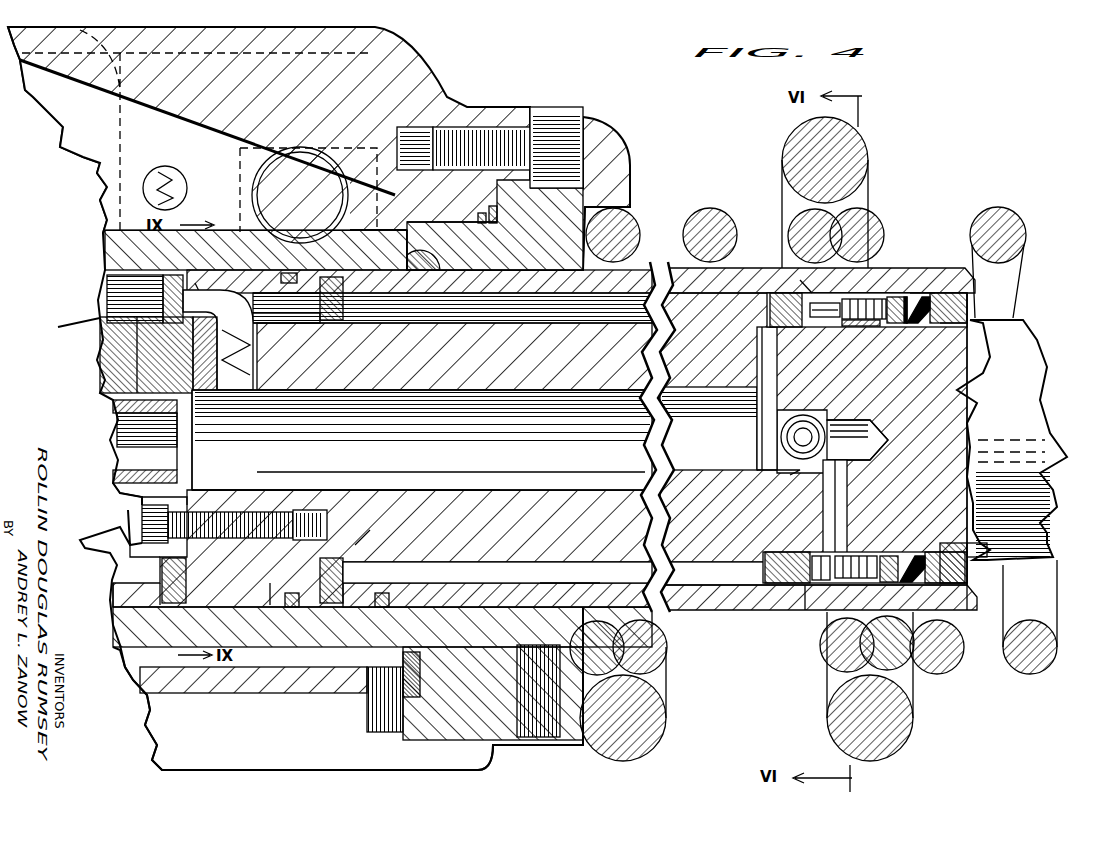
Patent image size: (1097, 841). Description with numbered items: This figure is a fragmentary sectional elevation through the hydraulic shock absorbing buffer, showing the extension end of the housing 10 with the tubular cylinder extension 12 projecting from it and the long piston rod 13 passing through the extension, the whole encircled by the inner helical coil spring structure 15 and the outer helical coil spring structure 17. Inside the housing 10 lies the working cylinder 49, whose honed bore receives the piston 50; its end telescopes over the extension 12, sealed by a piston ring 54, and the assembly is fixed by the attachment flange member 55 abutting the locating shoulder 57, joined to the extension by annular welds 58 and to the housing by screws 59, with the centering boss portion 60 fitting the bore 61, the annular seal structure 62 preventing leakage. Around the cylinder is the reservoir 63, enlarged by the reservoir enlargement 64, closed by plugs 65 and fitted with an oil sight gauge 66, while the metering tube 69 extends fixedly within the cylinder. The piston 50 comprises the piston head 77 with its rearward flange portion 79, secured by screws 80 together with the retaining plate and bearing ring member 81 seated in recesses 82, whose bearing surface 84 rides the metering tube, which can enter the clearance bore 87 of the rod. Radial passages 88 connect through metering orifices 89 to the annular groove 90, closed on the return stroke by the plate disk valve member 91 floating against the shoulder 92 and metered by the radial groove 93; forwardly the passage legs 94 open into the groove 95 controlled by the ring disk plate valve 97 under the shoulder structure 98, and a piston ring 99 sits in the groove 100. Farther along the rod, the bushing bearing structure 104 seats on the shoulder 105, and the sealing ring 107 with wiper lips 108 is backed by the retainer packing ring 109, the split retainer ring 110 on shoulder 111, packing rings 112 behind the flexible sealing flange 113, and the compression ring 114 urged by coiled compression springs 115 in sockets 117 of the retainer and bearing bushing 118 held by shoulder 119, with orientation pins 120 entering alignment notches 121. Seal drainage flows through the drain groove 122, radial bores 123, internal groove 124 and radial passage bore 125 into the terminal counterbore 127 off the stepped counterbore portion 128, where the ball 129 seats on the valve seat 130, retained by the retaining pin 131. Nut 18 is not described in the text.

The housing 10 is at (158, 690).
The cylinder extension 12 is at (748, 272).
The piston rod 13 is at (1022, 350).
The inner helical coil spring structure 15 is at (1022, 240).
The outer helical coil spring structure 17 is at (858, 157).
The nut 18 is at (305, 540).
The working cylinder 49 is at (103, 266).
The piston 50 is at (151, 596).
The piston ring 54 is at (416, 590).
The attachment flange member 55 is at (518, 107).
The locating shoulder 57 is at (565, 590).
The annular welds 58 is at (525, 302).
The screws 59 is at (556, 108).
The centering boss portion 60 is at (406, 230).
The concentric bore 61 is at (470, 222).
The annular seal structure 62 is at (490, 207).
The reservoir 63 is at (147, 657).
The reservoir enlargement 64 is at (40, 82).
The plugs 65 is at (168, 176).
The oil sight gauge 66 is at (285, 174).
The metering tube 69 is at (113, 486).
The piston head 77 is at (250, 500).
The flange portion 79 is at (358, 608).
The screws 80 is at (287, 500).
The retaining plate and bearing ring member 81 is at (143, 358).
The recesses 82 is at (186, 330).
The cylindrical bearing surface 84 is at (158, 474).
The clearance bore 87 is at (505, 483).
The radial passages 88 is at (250, 330).
The metering orifices 89 is at (312, 302).
The annular groove 90 is at (356, 581).
The plate disk valve member 91 is at (338, 312).
The shoulder 92 is at (366, 545).
The radial groove 93 is at (318, 278).
The passage legs 94 is at (201, 288).
The annular groove 95 is at (161, 574).
The ring disk plate valve 97 is at (113, 599).
The shoulder structure 98 is at (128, 560).
The piston ring 99 is at (300, 607).
The piston ring groove 100 is at (283, 600).
The bushing bearing structure 104 is at (777, 610).
The shoulder 105 is at (765, 567).
The sealing ring 107 is at (926, 292).
The wiper lips 108 is at (916, 292).
The retainer packing ring 109 is at (958, 550).
The split retainer ring 110 is at (942, 326).
The shoulder 111 is at (960, 326).
The packing rings 112 is at (921, 326).
The sealing flange 113 is at (896, 326).
The compression ring 114 is at (904, 292).
The coiled compression springs 115 is at (822, 330).
The sockets 117 is at (855, 327).
The retainer and bearing bushing 118 is at (870, 556).
The shoulder 119 is at (866, 328).
The orientation pins 120 is at (794, 328).
The alignment notches 121 is at (805, 292).
The drain groove 122 is at (812, 610).
The radial bores 123 is at (815, 557).
The internal groove 124 is at (838, 560).
The radial passage bore 125 is at (846, 492).
The terminal counterbore 127 is at (838, 420).
The stepped counterbore portion 128 is at (735, 414).
The ball 129 is at (822, 441).
The valve seat 130 is at (798, 469).
The retaining pin 131 is at (757, 446).